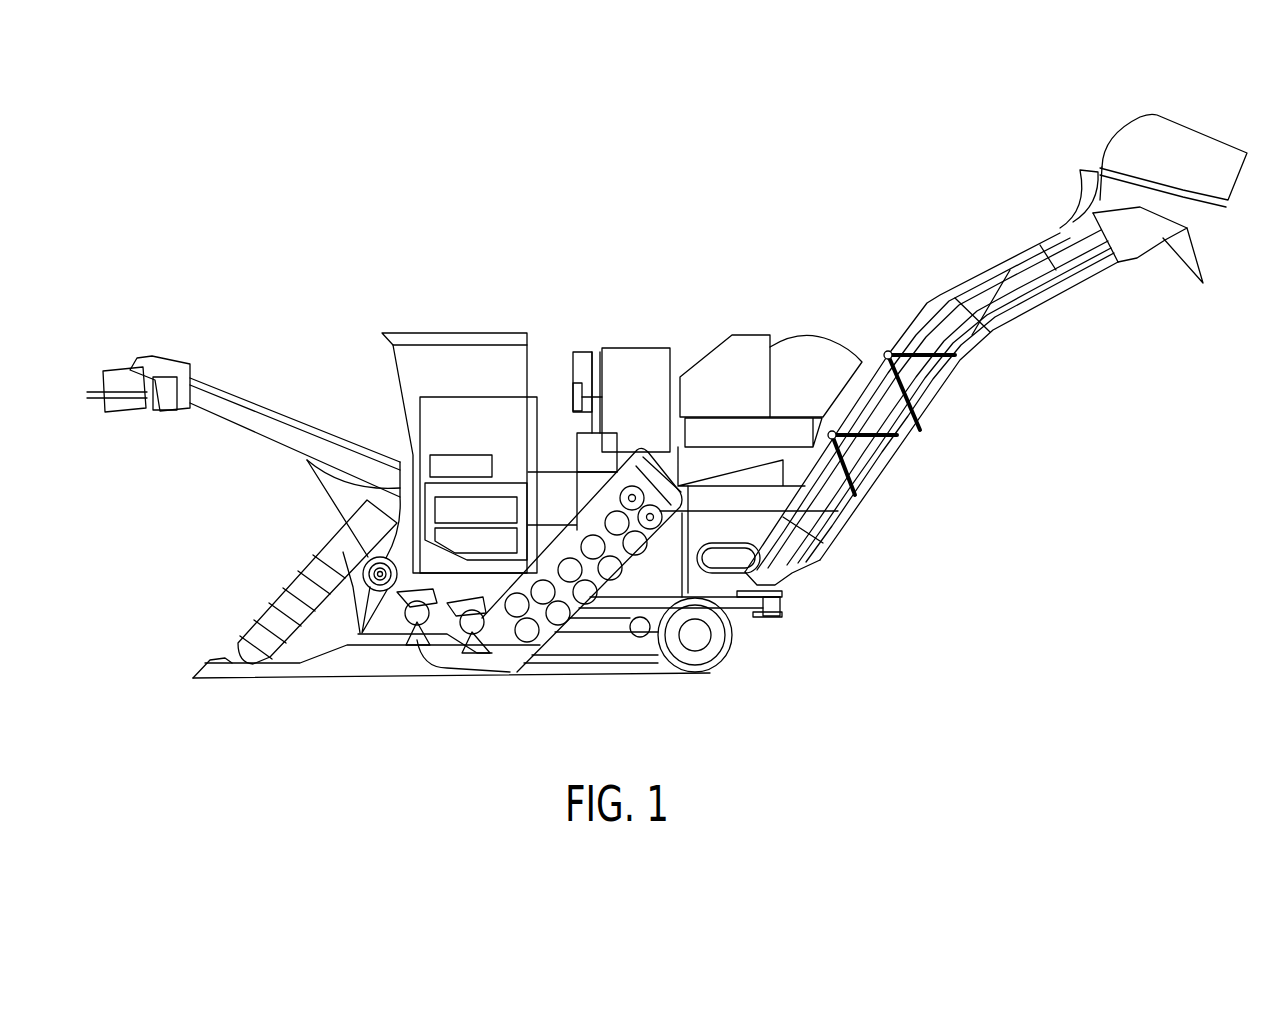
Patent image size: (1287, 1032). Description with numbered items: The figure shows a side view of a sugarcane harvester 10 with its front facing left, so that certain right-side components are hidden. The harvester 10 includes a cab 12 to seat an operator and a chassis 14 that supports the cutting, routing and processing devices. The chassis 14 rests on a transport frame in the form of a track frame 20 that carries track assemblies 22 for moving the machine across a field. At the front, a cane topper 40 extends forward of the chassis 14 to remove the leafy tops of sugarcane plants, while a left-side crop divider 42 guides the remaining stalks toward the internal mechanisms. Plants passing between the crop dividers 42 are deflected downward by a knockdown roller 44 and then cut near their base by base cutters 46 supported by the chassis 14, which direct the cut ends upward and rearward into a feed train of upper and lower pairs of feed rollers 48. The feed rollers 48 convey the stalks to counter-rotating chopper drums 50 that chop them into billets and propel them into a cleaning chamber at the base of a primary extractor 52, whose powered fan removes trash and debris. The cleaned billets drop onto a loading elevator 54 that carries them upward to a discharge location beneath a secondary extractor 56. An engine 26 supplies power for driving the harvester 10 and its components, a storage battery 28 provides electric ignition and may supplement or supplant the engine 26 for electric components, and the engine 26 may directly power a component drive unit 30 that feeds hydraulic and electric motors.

The sugarcane harvester 10 is at (624, 279).
The cab 12 is at (463, 358).
The chassis 14 is at (762, 617).
The track frame 20 is at (633, 639).
The track assemblies 22 is at (550, 672).
The engine 26 is at (503, 556).
The storage battery 28 is at (457, 466).
The component drive unit 30 is at (494, 508).
The cane topper 40 is at (113, 377).
The crop divider 42 is at (270, 608).
The knockdown roller 44 is at (360, 548).
The base cutters 46 is at (410, 621).
The feed rollers 48 is at (533, 663).
The chopper drums 50 is at (653, 496).
The primary extractor 52 is at (819, 362).
The loading elevator 54 is at (1040, 298).
The secondary extractor 56 is at (1163, 130).